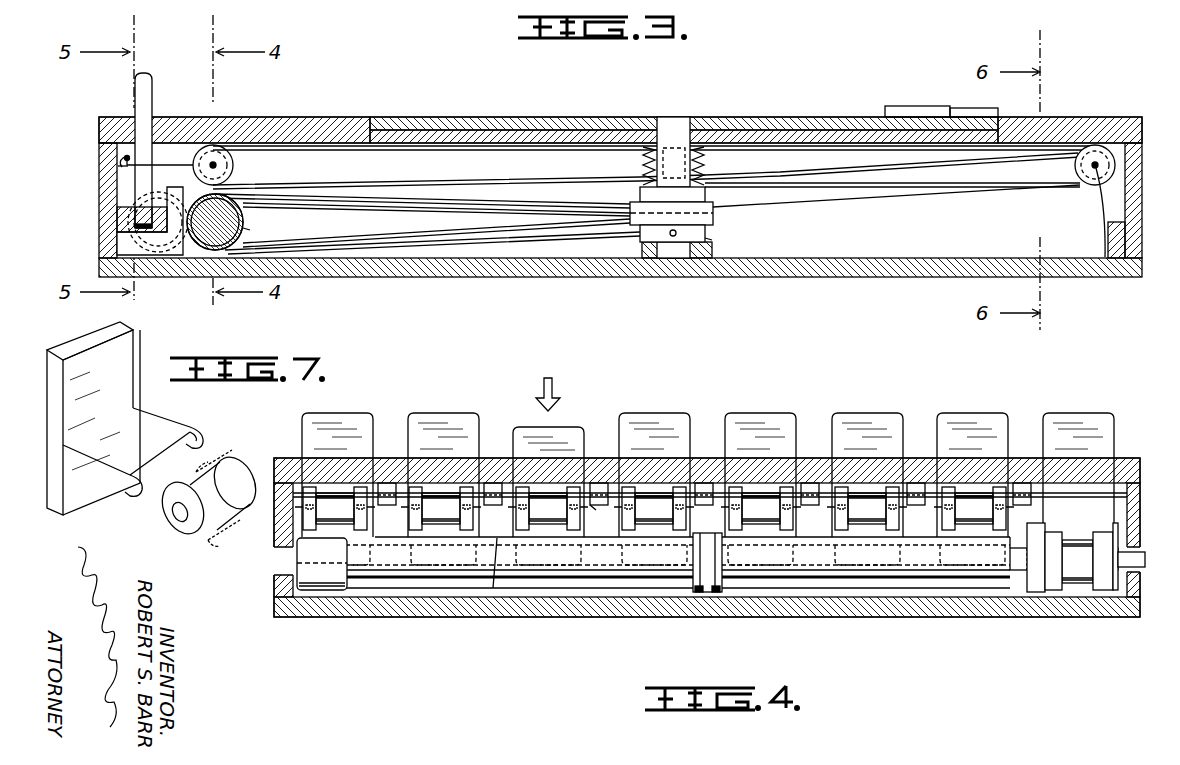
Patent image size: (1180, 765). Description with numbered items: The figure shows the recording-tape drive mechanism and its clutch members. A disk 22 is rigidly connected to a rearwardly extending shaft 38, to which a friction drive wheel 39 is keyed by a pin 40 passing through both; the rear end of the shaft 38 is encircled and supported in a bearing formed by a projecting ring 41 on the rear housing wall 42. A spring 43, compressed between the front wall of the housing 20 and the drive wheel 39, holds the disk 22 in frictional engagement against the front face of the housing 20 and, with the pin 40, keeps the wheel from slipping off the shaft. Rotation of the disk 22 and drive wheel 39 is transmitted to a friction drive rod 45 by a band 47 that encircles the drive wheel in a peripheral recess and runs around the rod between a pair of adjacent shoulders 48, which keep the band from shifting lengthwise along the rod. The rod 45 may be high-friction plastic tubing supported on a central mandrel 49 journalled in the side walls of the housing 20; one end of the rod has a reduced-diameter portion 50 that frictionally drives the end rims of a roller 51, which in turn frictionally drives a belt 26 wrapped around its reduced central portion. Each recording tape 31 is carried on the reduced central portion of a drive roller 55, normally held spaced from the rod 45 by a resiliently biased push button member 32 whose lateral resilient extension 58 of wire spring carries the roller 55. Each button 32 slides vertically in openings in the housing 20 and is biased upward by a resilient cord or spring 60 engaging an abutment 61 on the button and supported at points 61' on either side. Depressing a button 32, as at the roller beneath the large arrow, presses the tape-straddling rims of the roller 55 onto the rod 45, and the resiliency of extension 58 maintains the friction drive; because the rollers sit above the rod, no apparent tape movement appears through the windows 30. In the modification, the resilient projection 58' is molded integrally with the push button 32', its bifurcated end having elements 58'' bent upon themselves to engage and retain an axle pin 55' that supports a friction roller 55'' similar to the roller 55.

In FIG. 3, the housing 20 is at (329, 123).
In FIG. 3, the disk 22 is at (558, 123).
In FIG. 3, the belt 26 is at (800, 188).
In FIG. 3, the window 30 is at (1086, 128).
In FIG. 3, the tape 31 is at (870, 196).
In FIG. 4, the tape 31 is at (437, 487).
In FIG. 3, the push button member 32 is at (164, 150).
In FIG. 4, the push button member 32 is at (708, 459).
In FIG. 3, the shaft 38 is at (672, 122).
In FIG. 3, the friction drive wheel 39 is at (713, 222).
In FIG. 3, the pin 40 is at (673, 237).
In FIG. 3, the projecting ring 41 is at (706, 240).
In FIG. 3, the rear housing wall 42 is at (748, 275).
In FIG. 3, the spring 43 is at (641, 164).
In FIG. 3, the friction drive rod 45 is at (243, 216).
In FIG. 4, the friction drive rod 45 is at (917, 578).
In FIG. 3, the band 47 is at (537, 230).
In FIG. 4, the band 47 is at (716, 592).
In FIG. 3, the shoulder 48 is at (245, 229).
In FIG. 4, the shoulder 48 is at (700, 592).
In FIG. 4, the central mandrel 49 is at (1135, 557).
In FIG. 4, the reduced diameter portion 50 is at (1082, 585).
In FIG. 4, the roller 51 is at (1052, 593).
In FIG. 3, the drive roller 55 is at (232, 165).
In FIG. 4, the drive roller 55 is at (654, 477).
In FIG. 3, the lateral resilient extension 58 is at (166, 160).
In FIG. 4, the lateral resilient extension 58 is at (704, 511).
In FIG. 3, the resilient cord or spring 60 is at (118, 166).
In FIG. 3, the abutment 61 is at (98, 144).
In FIG. 4, the support 61' is at (604, 519).
In FIG. 7, the push button 32' is at (113, 418).
In FIG. 7, the resilient projection 58' is at (138, 433).
In FIG. 7, the bifurcated end elements 58'' is at (159, 475).
In FIG. 7, the axle pin 55' is at (182, 498).
In FIG. 7, the friction roller 55'' is at (233, 477).